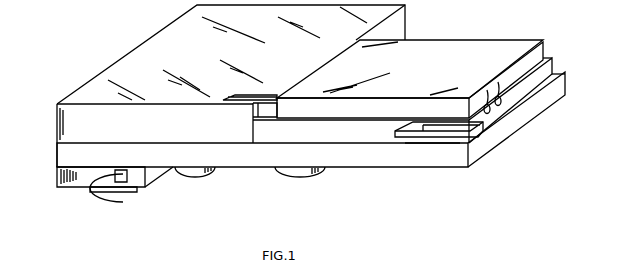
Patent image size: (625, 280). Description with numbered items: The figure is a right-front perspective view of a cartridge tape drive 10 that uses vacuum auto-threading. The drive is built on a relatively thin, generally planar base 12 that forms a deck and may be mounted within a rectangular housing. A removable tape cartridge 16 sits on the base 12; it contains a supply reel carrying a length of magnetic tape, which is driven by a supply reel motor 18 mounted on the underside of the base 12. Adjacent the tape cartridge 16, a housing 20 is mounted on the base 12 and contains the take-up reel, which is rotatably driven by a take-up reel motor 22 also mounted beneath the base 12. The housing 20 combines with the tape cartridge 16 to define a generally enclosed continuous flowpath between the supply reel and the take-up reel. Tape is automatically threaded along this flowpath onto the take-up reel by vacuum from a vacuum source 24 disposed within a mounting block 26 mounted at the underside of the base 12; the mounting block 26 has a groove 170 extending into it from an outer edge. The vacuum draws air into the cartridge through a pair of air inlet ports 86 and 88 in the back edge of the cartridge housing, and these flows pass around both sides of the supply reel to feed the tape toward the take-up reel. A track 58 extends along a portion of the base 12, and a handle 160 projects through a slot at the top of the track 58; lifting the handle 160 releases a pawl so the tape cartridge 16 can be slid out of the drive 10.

The cartridge tape drive 10 is at (501, 158).
The base 12 is at (543, 102).
The tape cartridge 16 is at (433, 57).
The supply reel motor 18 is at (312, 172).
The housing 20 is at (58, 124).
The take-up reel motor 22 is at (208, 172).
The vacuum source 24 is at (116, 185).
The mounting block 26 is at (57, 176).
The track 58 is at (432, 143).
The air inlet port 86 is at (484, 95).
The air inlet port 88 is at (499, 90).
The handle 160 is at (395, 133).
The groove 170 is at (92, 187).